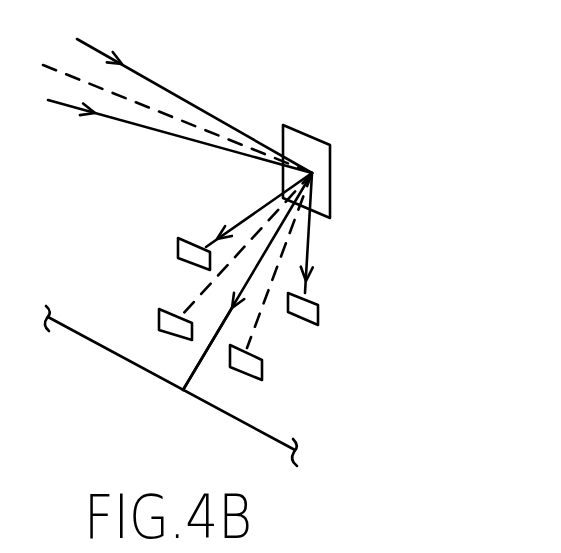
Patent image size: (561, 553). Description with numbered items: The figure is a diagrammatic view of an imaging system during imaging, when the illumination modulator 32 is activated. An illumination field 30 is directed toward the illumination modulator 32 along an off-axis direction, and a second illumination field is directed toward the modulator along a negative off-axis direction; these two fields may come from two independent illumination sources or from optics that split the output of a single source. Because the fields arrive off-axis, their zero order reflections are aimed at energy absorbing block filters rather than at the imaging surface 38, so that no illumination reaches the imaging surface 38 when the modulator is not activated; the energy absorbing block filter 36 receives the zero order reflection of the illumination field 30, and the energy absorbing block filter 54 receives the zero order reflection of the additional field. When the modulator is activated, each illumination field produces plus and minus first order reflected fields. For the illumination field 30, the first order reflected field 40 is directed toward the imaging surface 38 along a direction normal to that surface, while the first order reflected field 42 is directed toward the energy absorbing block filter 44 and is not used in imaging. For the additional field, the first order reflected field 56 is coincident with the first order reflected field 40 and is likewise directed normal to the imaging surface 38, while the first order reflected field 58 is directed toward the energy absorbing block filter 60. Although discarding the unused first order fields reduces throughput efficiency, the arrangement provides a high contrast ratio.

The illumination field 30 is at (185, 97).
The illumination modulator 32 is at (306, 128).
The energy absorbing block filter 36 is at (160, 311).
The imaging surface 38 is at (137, 366).
The first order reflected field 40 is at (197, 363).
The first order reflected field 42 is at (253, 211).
The energy absorbing block filter 44 is at (178, 248).
The energy absorbing block filter 54 is at (263, 372).
The first order reflected field 56 is at (204, 362).
The first order reflected field 58 is at (314, 250).
The energy absorbing block filter 60 is at (320, 313).